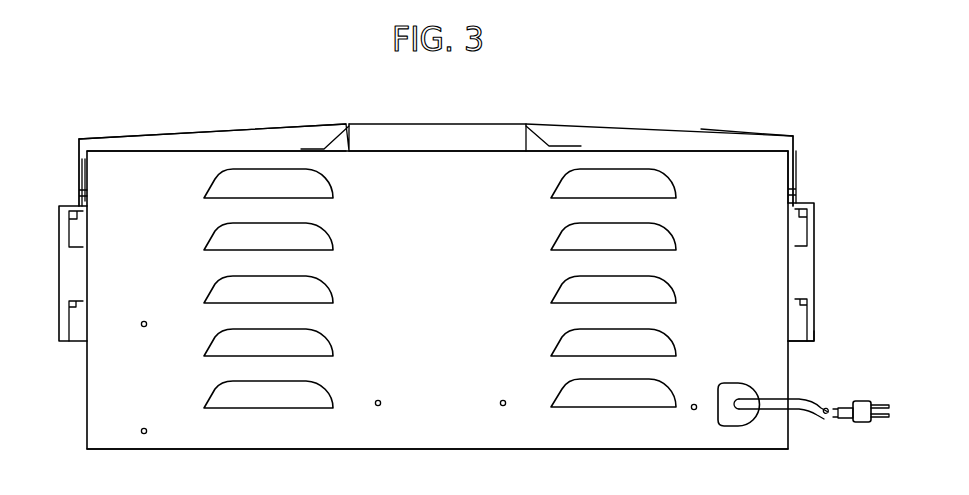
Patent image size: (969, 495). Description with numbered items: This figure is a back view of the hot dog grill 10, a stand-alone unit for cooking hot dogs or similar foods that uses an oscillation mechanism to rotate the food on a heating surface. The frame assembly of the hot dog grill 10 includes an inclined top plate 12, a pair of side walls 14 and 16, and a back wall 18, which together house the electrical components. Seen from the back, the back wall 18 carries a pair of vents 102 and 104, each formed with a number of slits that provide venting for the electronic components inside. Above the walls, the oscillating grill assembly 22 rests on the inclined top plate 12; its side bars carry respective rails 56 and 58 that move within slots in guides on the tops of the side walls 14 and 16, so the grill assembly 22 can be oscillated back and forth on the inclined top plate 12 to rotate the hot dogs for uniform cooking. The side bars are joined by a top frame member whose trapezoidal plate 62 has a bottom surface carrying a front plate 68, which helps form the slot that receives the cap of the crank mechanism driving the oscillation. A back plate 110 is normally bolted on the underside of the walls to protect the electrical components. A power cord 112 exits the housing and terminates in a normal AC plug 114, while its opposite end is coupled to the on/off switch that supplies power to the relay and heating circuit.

The hot dog grill 10 is at (242, 118).
The inclined top plate 12 is at (177, 150).
The side wall 14 is at (792, 350).
The side wall 16 is at (88, 395).
The back wall 18 is at (767, 285).
The oscillating grill assembly 22 is at (613, 123).
The rail 56 is at (75, 168).
The rail 58 is at (800, 160).
The trapezoidal plate 62 is at (708, 132).
The front plate 68 is at (503, 133).
The vent 102 is at (258, 397).
The vent 104 is at (637, 402).
The back plate 110 is at (683, 448).
The power cord 112 is at (843, 420).
The AC plug 114 is at (858, 423).